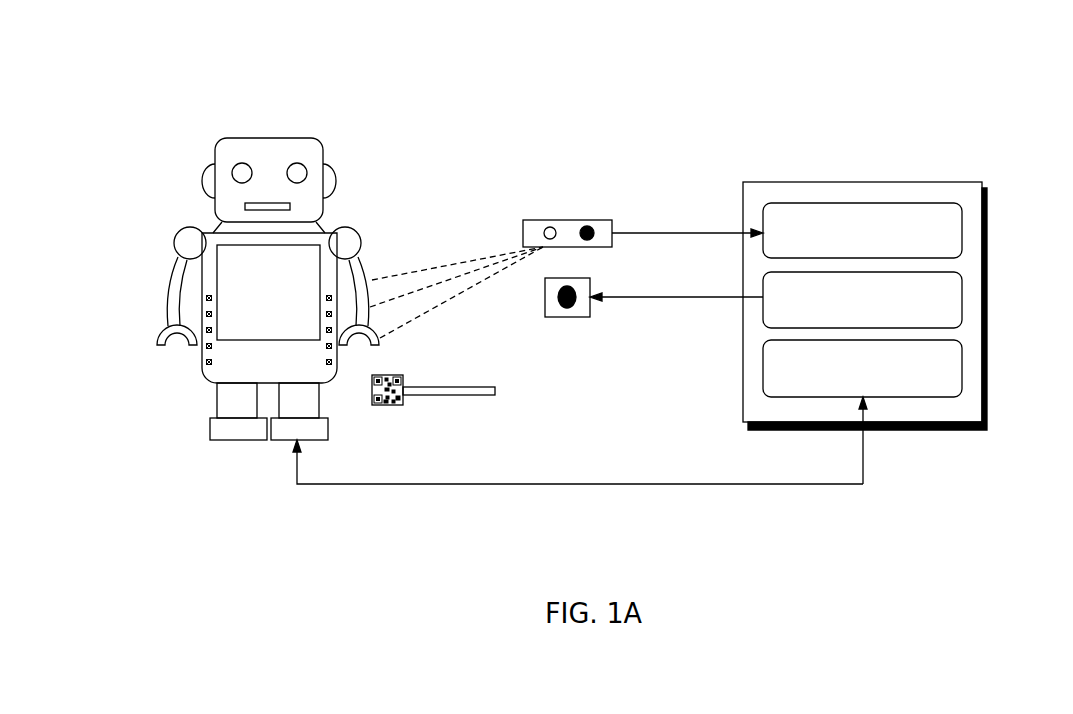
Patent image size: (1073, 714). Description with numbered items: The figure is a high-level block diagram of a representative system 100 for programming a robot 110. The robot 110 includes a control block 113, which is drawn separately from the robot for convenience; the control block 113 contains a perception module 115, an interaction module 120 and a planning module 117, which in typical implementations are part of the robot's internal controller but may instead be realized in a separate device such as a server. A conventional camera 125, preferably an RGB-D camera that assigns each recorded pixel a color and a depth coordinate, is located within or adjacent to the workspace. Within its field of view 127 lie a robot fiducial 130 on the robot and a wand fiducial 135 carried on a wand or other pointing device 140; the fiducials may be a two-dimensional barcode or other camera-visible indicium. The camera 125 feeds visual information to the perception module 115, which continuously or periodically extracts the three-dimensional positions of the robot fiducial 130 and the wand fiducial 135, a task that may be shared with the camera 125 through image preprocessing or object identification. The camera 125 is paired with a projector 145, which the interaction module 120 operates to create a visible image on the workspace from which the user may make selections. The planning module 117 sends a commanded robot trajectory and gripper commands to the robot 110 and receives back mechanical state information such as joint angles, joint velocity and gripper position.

The system 100 is at (874, 74).
The robot 110 is at (295, 138).
The control block 113 is at (963, 182).
The perception module 115 is at (962, 231).
The planning module 117 is at (962, 368).
The interaction module 120 is at (962, 297).
The camera 125 is at (597, 220).
The field of view 127 is at (440, 266).
The robot fiducial 130 is at (286, 335).
The wand fiducial 135 is at (387, 405).
The pointing device 140 is at (485, 406).
The projector 145 is at (577, 317).